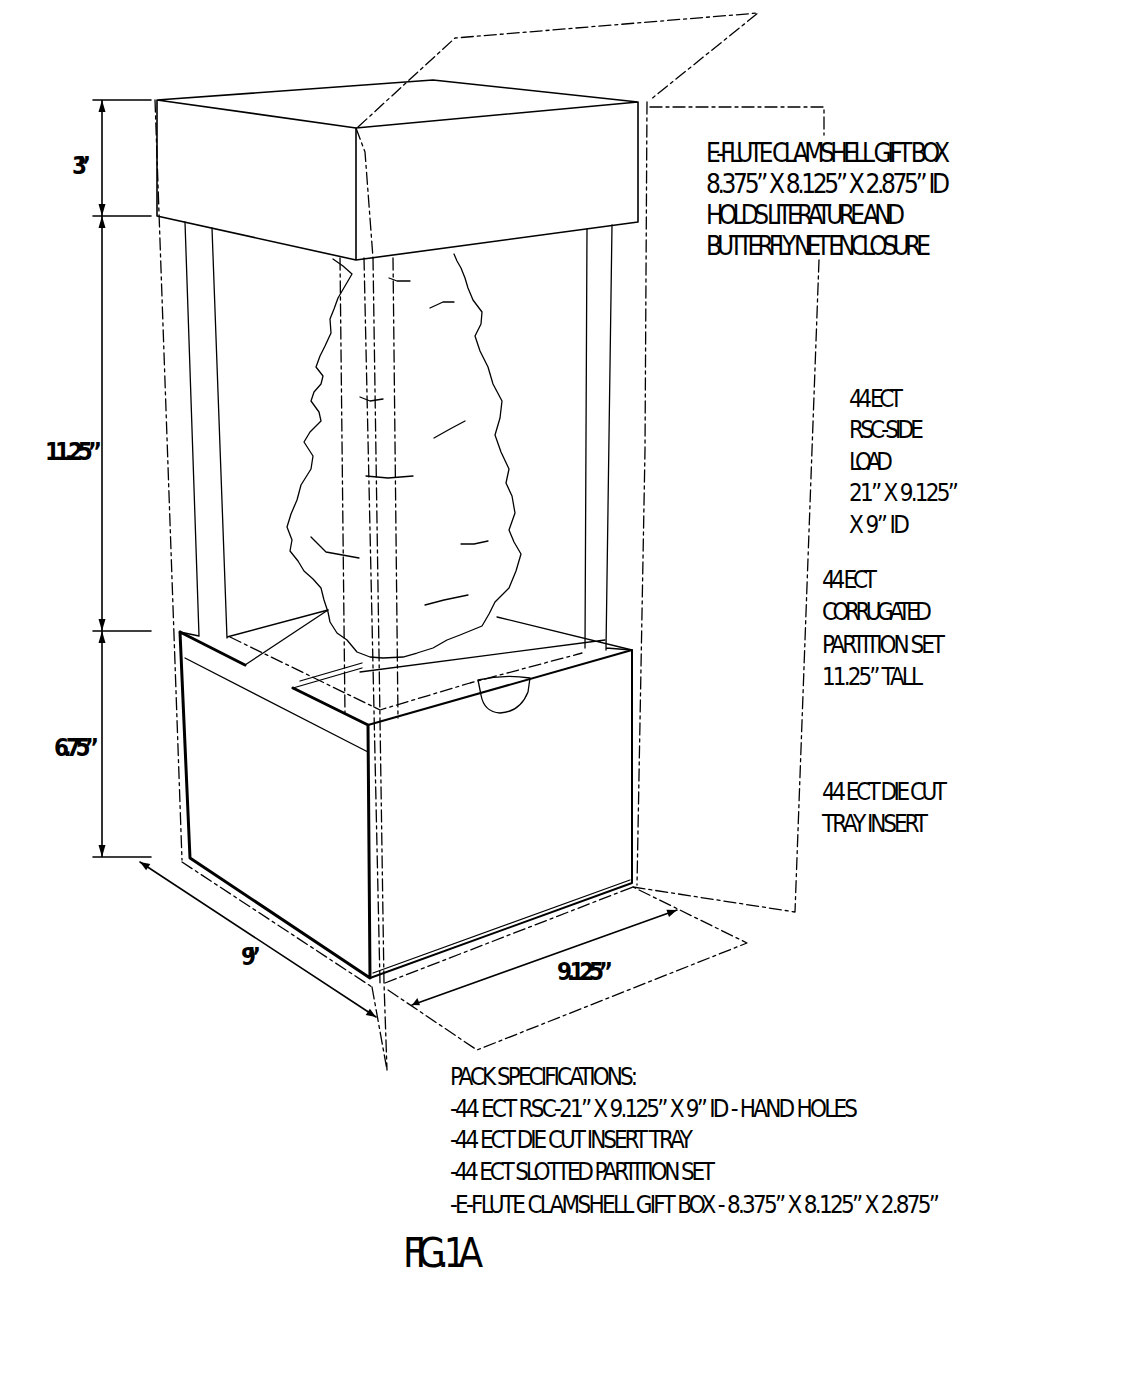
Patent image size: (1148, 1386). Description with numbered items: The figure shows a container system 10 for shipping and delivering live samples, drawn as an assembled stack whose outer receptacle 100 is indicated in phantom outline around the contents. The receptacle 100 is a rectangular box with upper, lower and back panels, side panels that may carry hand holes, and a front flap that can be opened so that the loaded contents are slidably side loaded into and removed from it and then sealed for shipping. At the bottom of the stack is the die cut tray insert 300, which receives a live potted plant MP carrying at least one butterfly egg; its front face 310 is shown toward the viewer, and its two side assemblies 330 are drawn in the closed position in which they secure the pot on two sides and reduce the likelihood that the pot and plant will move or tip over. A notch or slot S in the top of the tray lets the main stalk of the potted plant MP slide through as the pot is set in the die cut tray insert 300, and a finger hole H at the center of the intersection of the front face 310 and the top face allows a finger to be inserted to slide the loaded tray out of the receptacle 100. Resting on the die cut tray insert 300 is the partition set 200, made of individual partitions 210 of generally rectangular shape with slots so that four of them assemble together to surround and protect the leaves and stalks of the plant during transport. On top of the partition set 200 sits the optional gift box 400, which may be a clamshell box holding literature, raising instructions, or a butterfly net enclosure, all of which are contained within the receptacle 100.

The container system 10 is at (230, 32).
The receptacle 100 is at (633, 815).
The partition set 200 is at (610, 573).
The individual partition 210 is at (562, 389).
The die cut tray insert 300 is at (607, 825).
The front face 310 is at (515, 830).
The side assemblies 330 is at (292, 814).
The gift box 400 is at (697, 187).
The finger hole H is at (517, 698).
The slot S is at (293, 688).
The potted plant MP is at (289, 534).